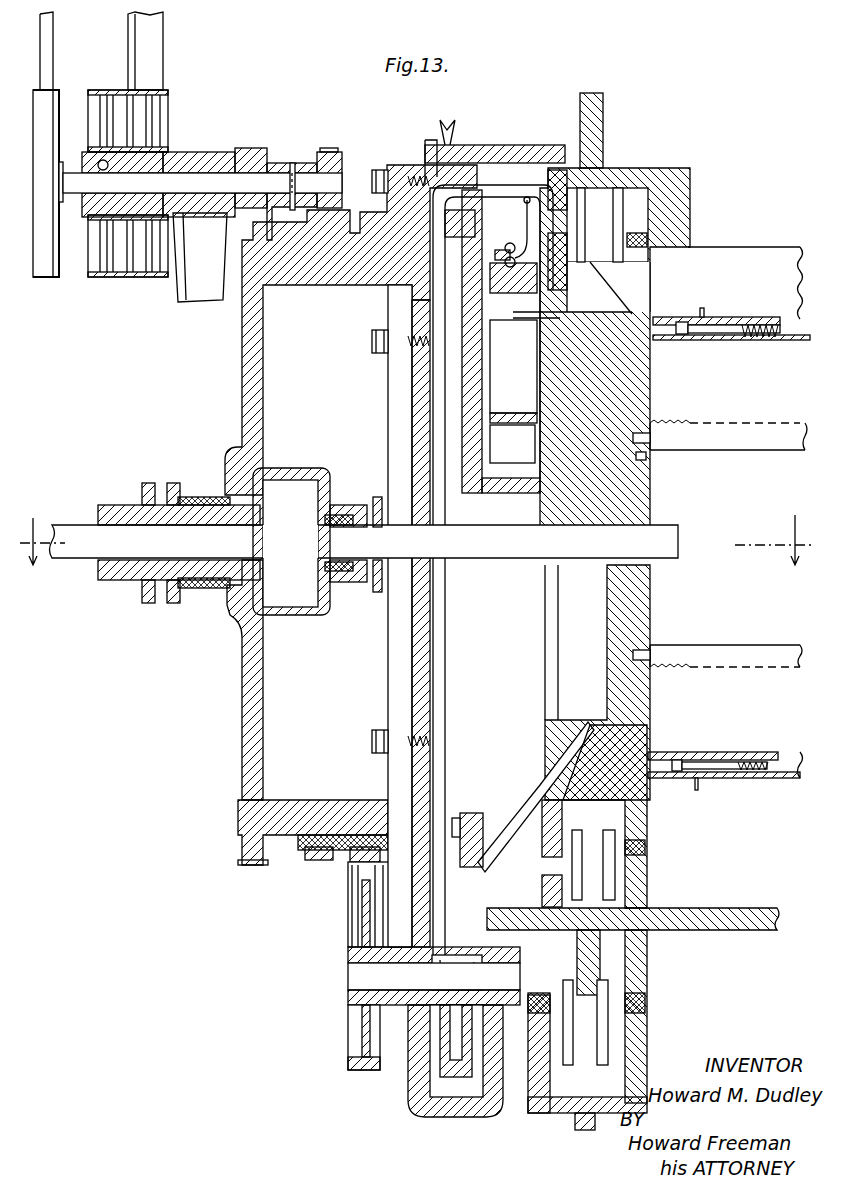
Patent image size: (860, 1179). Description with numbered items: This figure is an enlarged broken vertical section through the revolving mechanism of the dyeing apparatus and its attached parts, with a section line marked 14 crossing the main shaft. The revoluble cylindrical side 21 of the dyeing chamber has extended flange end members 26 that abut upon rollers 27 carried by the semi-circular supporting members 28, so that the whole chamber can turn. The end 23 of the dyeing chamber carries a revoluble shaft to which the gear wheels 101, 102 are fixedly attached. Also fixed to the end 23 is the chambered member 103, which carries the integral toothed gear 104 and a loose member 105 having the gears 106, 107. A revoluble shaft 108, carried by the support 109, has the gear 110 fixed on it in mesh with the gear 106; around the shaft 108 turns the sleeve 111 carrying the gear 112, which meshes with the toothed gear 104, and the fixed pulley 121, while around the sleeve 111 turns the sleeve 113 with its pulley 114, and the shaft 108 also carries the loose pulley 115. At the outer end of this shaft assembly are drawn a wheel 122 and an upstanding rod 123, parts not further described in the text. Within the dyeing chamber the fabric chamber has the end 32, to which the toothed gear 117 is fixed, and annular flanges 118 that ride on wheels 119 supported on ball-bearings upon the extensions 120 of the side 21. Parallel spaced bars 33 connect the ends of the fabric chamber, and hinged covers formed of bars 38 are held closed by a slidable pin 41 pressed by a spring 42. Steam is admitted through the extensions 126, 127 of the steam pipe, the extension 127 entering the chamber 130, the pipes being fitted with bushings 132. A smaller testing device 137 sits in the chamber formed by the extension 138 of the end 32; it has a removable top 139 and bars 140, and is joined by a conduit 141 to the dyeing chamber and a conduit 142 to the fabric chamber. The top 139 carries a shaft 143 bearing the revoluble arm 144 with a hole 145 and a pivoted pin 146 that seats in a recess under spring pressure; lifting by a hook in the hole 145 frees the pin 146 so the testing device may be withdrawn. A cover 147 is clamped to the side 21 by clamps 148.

The section line 14- 14 is at (416, 553).
The revoluble cylindrical side 21 is at (745, 908).
The end 23 is at (412, 672).
The extended flange end members 26 is at (605, 110).
The rollers 27 is at (590, 1052).
The semi-circular supporting members 28 is at (647, 1063).
The end 32 is at (652, 400).
The parallel spaced bars 33 is at (760, 452).
The parallel spaced bars 38 is at (798, 318).
The slidable pin 41 is at (698, 340).
The spring 42 is at (755, 340).
The gear wheel 101 is at (457, 1098).
The gear wheel 102 is at (350, 945).
The chambered member 103 is at (242, 712).
The toothed gear 104 is at (240, 857).
The loose member 105 is at (355, 860).
The gear 106 is at (318, 850).
The gear 107 is at (340, 865).
The revoluble shaft 108 is at (262, 183).
The support 109 is at (195, 292).
The gear 110 is at (333, 150).
The sleeve 111 is at (182, 166).
The gear 112 is at (251, 156).
The sleeve 113 is at (215, 158).
The pulley 114 is at (168, 115).
The loose pulley 115 is at (61, 100).
The toothed gear 117 is at (476, 868).
The annular flanges 118 is at (610, 818).
The wheels 119 is at (600, 190).
The extensions 120 is at (600, 262).
The pulley 121 is at (95, 275).
The wheel 122 is at (56, 48).
The rod 123 is at (165, 45).
The extension 126 is at (80, 560).
The extension 127 is at (128, 583).
The chamber 130 is at (317, 541).
The bushings 132 is at (200, 588).
The testing device 137 is at (470, 335).
The extension 138 is at (470, 380).
The removable top 139 is at (516, 286).
The parallel spaced bars 140 is at (513, 410).
The conduit 141 is at (622, 305).
The conduit 142 is at (648, 458).
The shaft 143 is at (514, 250).
The revoluble arm 144 is at (526, 224).
The hole 145 is at (528, 197).
The pin 146 is at (506, 250).
The cover 147 is at (512, 145).
The clamps 148 is at (456, 128).